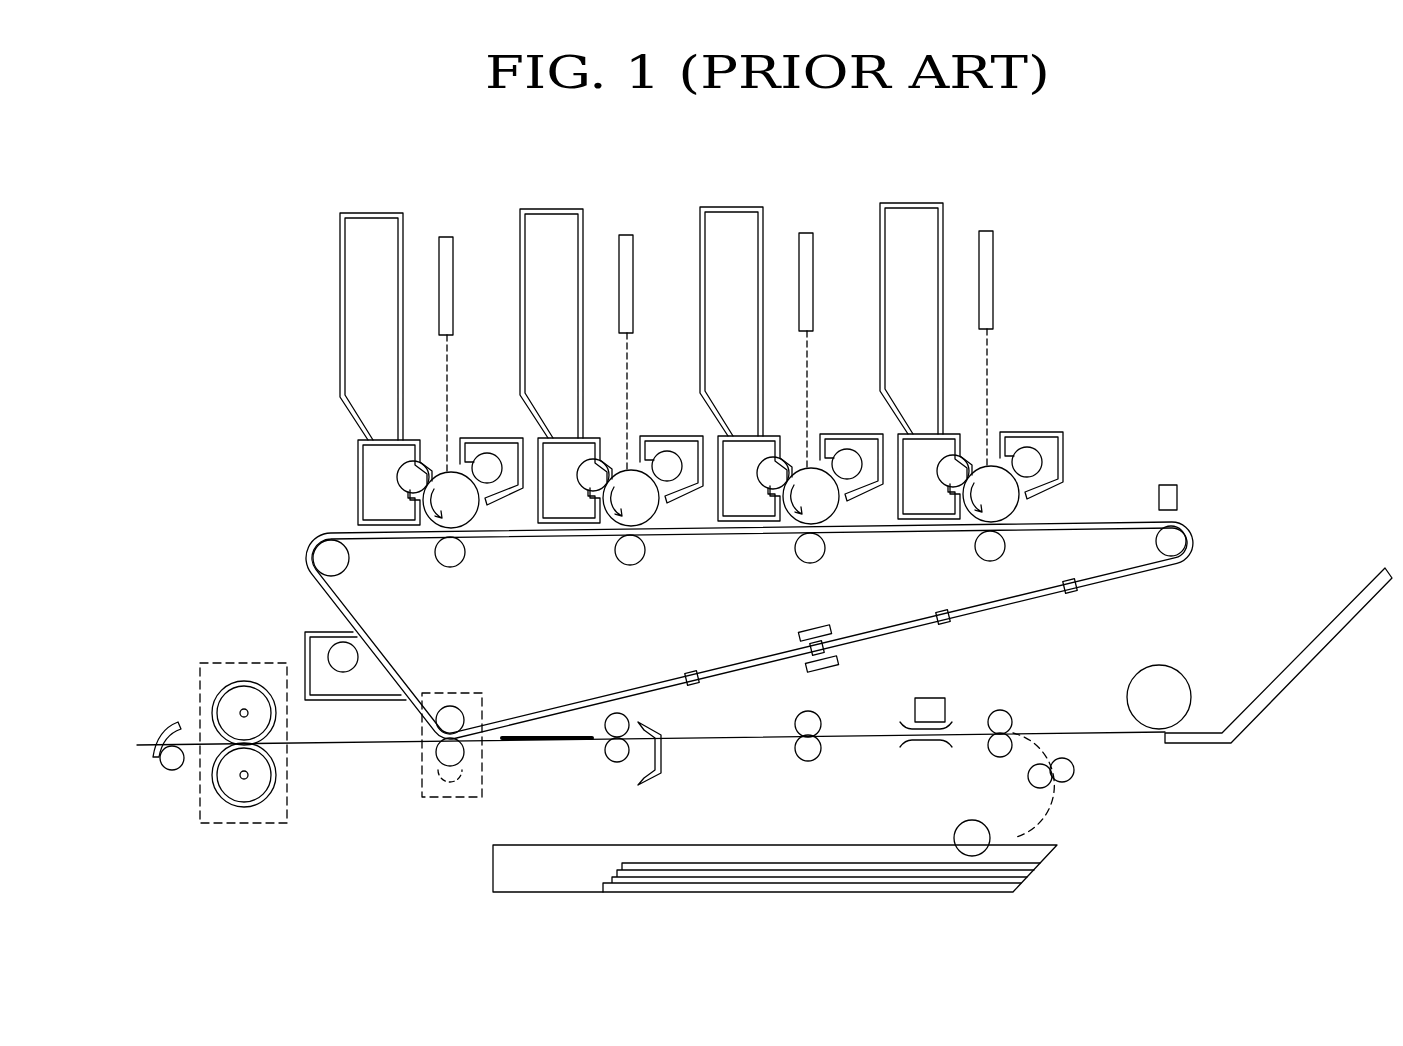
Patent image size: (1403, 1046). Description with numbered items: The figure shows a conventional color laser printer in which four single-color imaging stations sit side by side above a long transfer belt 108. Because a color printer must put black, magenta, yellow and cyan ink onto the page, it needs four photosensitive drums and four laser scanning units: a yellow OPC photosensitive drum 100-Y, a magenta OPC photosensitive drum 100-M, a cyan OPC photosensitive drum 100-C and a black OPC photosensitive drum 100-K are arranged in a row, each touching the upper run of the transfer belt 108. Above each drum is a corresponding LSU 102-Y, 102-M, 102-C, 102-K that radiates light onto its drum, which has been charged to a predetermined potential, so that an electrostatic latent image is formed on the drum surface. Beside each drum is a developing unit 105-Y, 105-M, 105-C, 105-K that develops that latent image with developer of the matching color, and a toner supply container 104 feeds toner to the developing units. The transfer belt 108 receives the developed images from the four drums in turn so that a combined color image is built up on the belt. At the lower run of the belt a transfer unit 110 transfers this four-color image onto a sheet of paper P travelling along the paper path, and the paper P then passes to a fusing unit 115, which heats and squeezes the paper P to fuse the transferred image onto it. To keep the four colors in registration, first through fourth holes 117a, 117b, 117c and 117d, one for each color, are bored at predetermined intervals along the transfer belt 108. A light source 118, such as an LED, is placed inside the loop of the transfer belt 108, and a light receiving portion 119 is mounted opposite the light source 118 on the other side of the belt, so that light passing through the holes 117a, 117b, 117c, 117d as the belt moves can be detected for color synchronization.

The yellow OPC photosensitive drum 100-Y is at (445, 470).
The magenta OPC photosensitive drum 100-M is at (626, 457).
The cyan OPC photosensitive drum 100-C is at (804, 455).
The black OPC photosensitive drum 100-K is at (984, 453).
The LSU 102-Y is at (443, 236).
The LSU 102-M is at (621, 322).
The LSU 102-C is at (799, 320).
The LSU 102-K is at (979, 319).
The toner supply container 104 is at (911, 286).
The developing unit 105-Y is at (358, 485).
The developing unit 105-M is at (571, 439).
The developing unit 105-C is at (751, 437).
The developing unit 105-K is at (932, 435).
The transfer belt 108 is at (1003, 612).
The transfer unit 110 is at (452, 798).
The fusing unit 115 is at (243, 662).
The first hole 117a is at (692, 672).
The second hole 117b is at (811, 653).
The third hole 117c is at (942, 611).
The fourth hole 117d is at (1070, 592).
The light source 118 is at (814, 627).
The light receiving portion 119 is at (826, 670).
The paper P is at (548, 743).